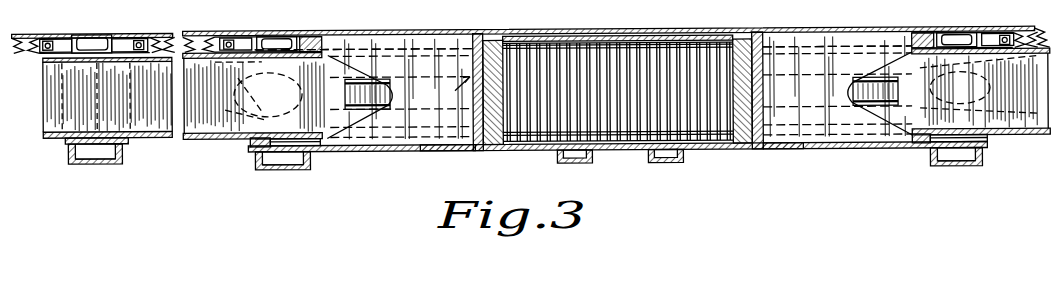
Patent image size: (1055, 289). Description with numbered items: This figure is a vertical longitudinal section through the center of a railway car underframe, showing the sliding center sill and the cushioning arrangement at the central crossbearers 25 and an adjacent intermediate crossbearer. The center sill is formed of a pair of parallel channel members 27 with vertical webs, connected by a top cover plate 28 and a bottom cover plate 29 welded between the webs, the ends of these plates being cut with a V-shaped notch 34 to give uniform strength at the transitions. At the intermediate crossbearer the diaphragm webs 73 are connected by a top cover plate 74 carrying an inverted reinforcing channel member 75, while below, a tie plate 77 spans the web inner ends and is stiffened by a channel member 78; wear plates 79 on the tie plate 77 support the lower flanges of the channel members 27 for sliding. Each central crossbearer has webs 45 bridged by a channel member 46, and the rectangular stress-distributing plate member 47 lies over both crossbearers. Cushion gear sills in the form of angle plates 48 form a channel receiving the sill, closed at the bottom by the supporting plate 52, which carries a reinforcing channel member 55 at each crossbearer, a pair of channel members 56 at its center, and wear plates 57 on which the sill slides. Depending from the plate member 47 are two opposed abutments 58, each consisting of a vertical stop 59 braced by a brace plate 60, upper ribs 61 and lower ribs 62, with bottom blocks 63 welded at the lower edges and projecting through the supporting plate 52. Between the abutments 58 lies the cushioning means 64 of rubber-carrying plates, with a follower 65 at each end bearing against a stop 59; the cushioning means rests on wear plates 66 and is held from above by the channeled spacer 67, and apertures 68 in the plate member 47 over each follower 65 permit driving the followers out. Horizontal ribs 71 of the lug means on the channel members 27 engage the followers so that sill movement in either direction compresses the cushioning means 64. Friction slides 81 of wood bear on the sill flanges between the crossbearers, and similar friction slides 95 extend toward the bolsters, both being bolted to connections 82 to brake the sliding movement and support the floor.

The central crossbearer 25 is at (270, 176).
The channel member 27 is at (205, 134).
The top cover plate 28 is at (158, 64).
The bottom cover plate 29 is at (168, 131).
The V-shaped notch 34 is at (252, 62).
The web 45 is at (976, 92).
The channel member 46 is at (280, 37).
The stress-distributing plate member 47 is at (656, 31).
The angle plate 48 is at (252, 144).
The supporting plate 52 is at (536, 152).
The reinforcing channel member 55 is at (308, 170).
The channel member 56 is at (650, 165).
The wear plate 57 is at (268, 146).
The abutment 58 is at (800, 20).
The vertical stop 59 is at (478, 35).
The brace plate 60 is at (393, 36).
The upper rib 61 is at (430, 48).
The lower rib 62 is at (460, 152).
The bottom block 63 is at (436, 152).
The cushioning means 64 is at (610, 45).
The follower 65 is at (493, 146).
The wear plate 66 is at (710, 152).
The spacer 67 is at (556, 40).
The aperture 68 is at (508, 38).
The horizontal rib 71 is at (348, 86).
The web 73 is at (98, 76).
The top cover plate 74 is at (78, 34).
The reinforcing channel member 75 is at (102, 34).
The tie plate 77 is at (70, 150).
The channel member 78 is at (96, 163).
The wear plate 79 is at (128, 141).
The friction slide 81 is at (203, 38).
The connection 82 is at (128, 38).
The friction slide 95 is at (30, 36).